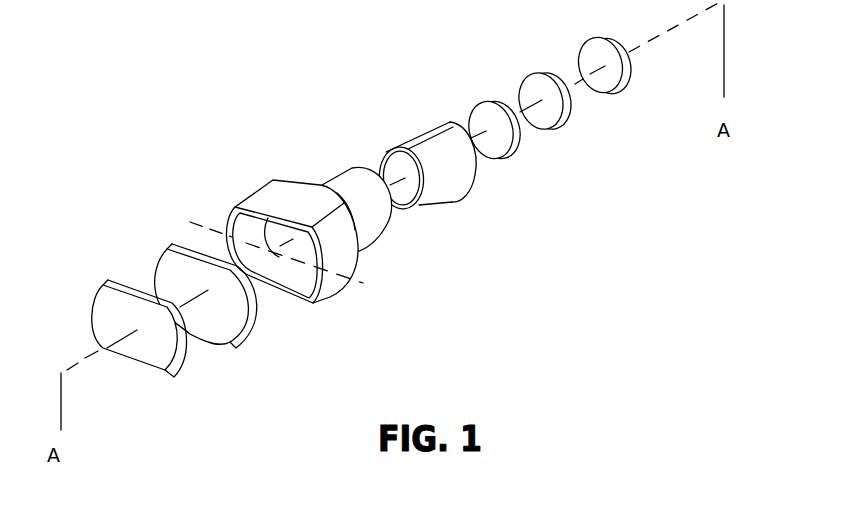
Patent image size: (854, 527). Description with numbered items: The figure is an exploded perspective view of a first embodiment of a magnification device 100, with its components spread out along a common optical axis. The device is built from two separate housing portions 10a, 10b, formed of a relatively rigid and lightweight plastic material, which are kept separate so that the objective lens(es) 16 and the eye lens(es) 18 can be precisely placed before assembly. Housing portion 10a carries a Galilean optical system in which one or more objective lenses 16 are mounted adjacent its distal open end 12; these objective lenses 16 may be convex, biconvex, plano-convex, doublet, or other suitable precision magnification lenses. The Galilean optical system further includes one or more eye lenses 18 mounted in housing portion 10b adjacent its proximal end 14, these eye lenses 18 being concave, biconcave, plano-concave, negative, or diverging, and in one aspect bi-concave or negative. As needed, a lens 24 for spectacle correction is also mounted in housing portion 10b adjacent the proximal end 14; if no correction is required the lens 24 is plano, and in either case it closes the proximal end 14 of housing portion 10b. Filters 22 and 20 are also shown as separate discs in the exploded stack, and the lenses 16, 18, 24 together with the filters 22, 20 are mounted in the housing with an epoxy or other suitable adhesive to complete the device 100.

The magnification device 100 is at (302, 98).
The distal open end 12 is at (238, 226).
The proximal end 14 is at (412, 156).
The housing portion 10a is at (372, 222).
The housing portion 10b is at (448, 180).
The objective lens 16 is at (222, 327).
The eye lens 18 is at (516, 142).
The filter 20 is at (160, 365).
The filter 22 is at (568, 110).
The lens 24 is at (627, 68).